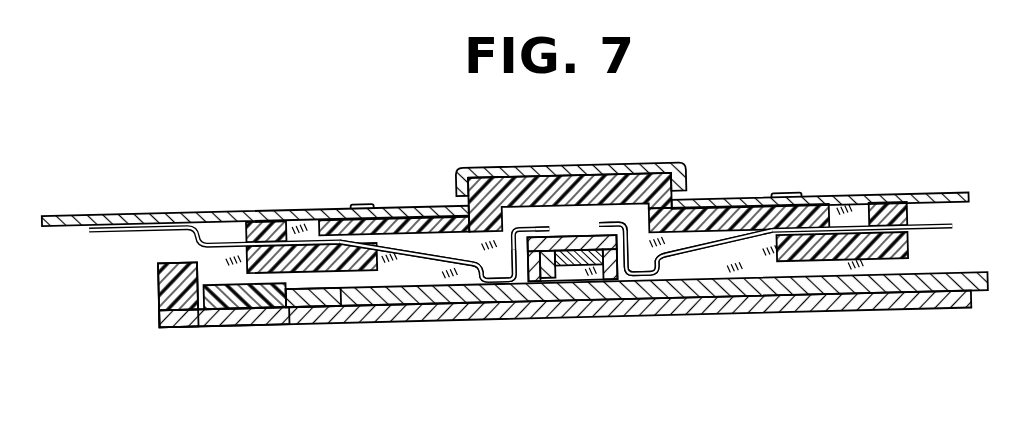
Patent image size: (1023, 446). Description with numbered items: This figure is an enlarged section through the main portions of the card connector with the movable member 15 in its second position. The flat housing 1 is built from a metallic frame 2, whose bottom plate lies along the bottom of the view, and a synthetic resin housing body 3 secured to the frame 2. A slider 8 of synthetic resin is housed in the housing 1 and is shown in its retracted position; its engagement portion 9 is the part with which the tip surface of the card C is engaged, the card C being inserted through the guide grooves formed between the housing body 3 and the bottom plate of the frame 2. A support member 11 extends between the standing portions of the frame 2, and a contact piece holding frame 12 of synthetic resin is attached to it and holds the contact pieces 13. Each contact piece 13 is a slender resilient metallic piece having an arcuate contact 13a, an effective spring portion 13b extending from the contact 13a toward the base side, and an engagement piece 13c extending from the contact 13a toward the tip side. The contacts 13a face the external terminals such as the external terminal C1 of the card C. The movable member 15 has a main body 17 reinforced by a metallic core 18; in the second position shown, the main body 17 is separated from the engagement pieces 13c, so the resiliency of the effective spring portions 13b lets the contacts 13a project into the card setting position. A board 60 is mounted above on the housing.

The housing 1 is at (157, 323).
The frame 2 is at (750, 318).
The housing body 3 is at (157, 285).
The slider 8 is at (241, 318).
The engagement portion 9 is at (309, 308).
The support member 11 is at (478, 167).
The contact piece holding frame 12 is at (541, 177).
The contact piece 13 is at (215, 246).
The contact 13a is at (501, 282).
The effective spring portion 13b is at (437, 265).
The engagement piece 13c is at (530, 226).
The movable member 15 is at (614, 220).
The main body 17 is at (596, 283).
The metallic core 18 is at (549, 281).
The board 60 is at (374, 207).
The card C is at (976, 275).
The external terminal C1 is at (281, 310).